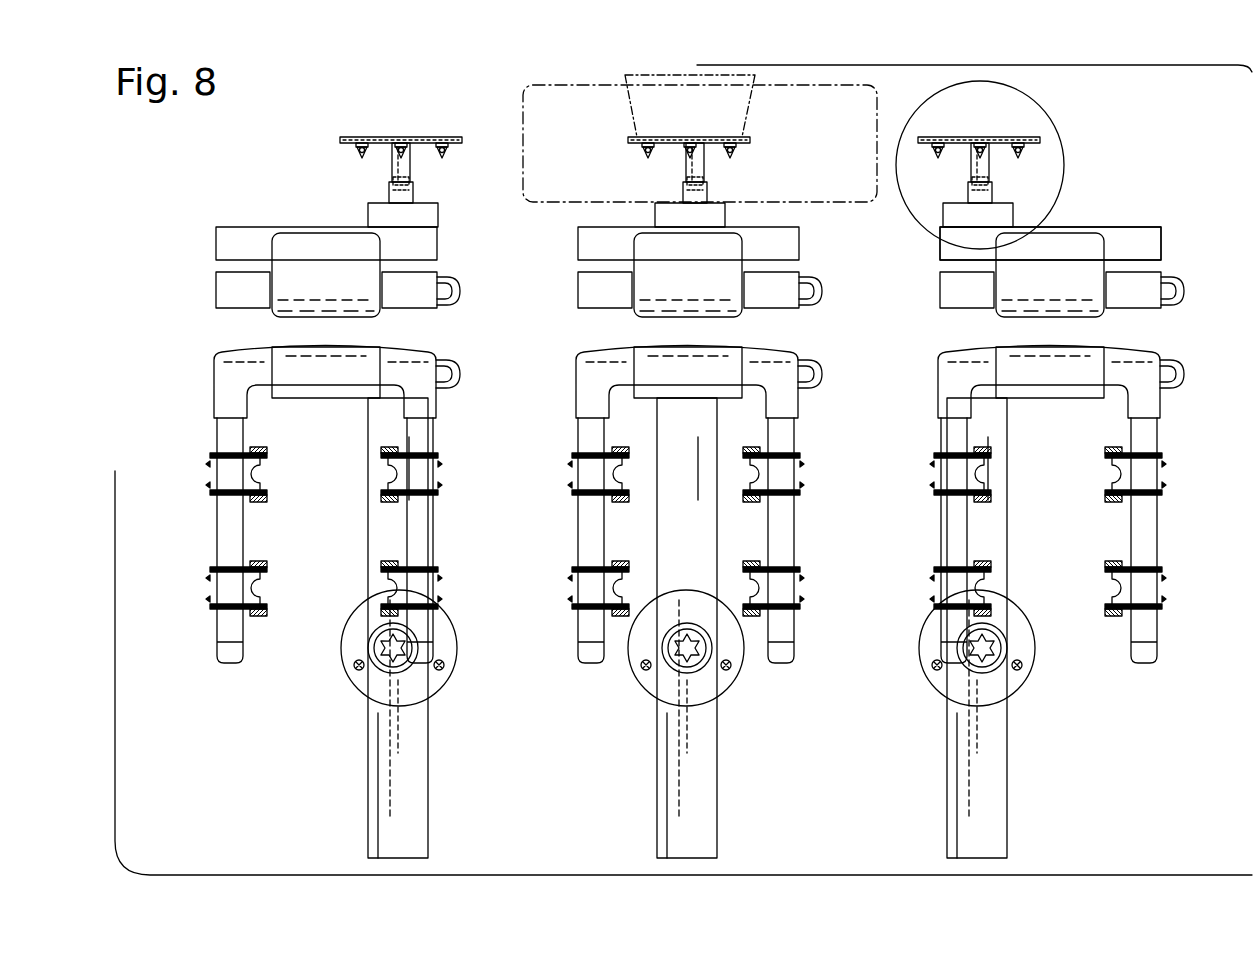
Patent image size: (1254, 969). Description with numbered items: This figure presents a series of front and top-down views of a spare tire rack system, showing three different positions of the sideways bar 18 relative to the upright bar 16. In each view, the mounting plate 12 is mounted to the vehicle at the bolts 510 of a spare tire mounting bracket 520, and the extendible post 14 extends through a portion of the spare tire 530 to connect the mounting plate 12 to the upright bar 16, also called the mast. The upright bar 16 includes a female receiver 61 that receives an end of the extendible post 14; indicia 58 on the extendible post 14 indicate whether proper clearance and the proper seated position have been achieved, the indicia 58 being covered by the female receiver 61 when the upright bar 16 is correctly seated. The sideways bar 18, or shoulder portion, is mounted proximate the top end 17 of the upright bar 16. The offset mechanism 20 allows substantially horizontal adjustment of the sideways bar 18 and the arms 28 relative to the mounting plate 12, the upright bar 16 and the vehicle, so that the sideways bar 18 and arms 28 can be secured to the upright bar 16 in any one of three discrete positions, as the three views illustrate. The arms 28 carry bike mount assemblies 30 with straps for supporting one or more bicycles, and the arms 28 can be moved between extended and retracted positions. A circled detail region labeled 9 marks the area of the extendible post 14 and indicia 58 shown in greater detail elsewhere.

The detail circle for FIG. 9 is at (945, 83).
The mounting plate 12 is at (352, 635).
The extendible post 14 is at (395, 172).
The upright bar 16 is at (418, 822).
The top end 17 is at (370, 218).
The sideways bar 18 is at (240, 355).
The offset mechanism 20 is at (1108, 181).
The arms 28 is at (232, 540).
The bike mount assemblies 30 is at (280, 478).
The indicia 58 is at (412, 178).
The female receiver 61 is at (410, 195).
The bolts 510 is at (442, 160).
The spare tire mounting bracket 520 is at (378, 137).
The spare tire 530 is at (523, 108).